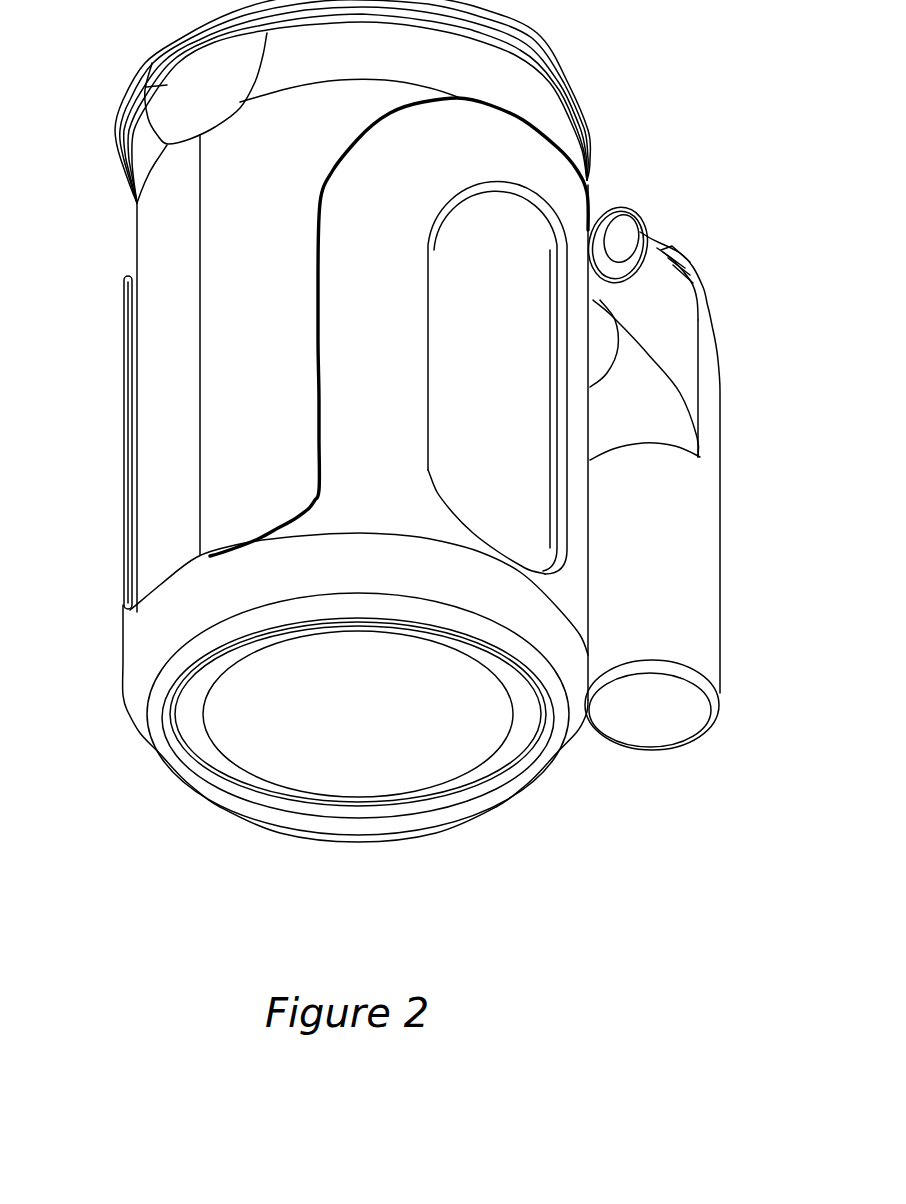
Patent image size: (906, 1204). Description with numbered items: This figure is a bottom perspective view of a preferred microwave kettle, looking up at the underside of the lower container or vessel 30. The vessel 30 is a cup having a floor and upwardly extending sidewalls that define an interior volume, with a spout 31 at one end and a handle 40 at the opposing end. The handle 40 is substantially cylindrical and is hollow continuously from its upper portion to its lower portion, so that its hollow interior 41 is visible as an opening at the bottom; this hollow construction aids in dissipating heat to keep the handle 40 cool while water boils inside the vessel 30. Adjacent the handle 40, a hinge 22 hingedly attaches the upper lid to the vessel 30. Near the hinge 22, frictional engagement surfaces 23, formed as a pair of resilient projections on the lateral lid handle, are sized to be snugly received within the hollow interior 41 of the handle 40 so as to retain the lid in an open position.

The hinge 22 is at (617, 233).
The frictional engagement surfaces 23 is at (690, 253).
The lower container or vessel 30 is at (187, 317).
The spout 31 is at (121, 106).
The handle 40 is at (690, 555).
The hollow interior 41 is at (643, 705).